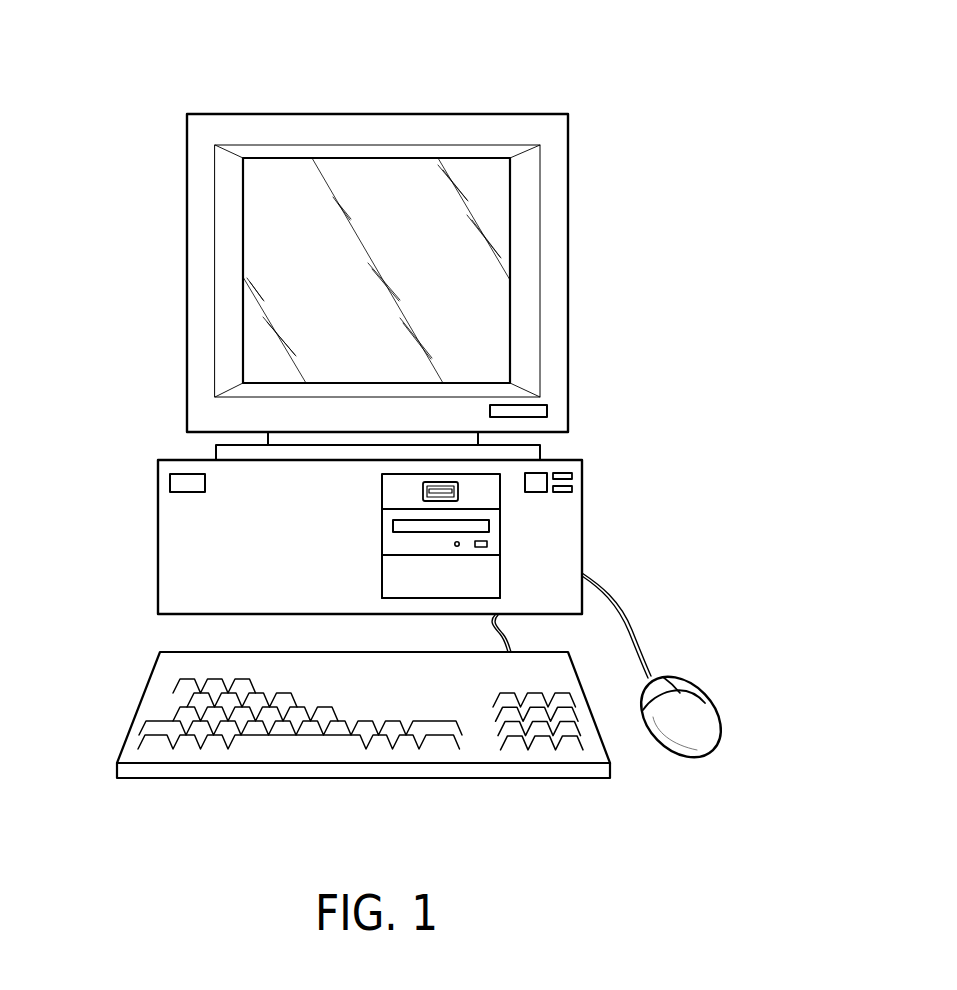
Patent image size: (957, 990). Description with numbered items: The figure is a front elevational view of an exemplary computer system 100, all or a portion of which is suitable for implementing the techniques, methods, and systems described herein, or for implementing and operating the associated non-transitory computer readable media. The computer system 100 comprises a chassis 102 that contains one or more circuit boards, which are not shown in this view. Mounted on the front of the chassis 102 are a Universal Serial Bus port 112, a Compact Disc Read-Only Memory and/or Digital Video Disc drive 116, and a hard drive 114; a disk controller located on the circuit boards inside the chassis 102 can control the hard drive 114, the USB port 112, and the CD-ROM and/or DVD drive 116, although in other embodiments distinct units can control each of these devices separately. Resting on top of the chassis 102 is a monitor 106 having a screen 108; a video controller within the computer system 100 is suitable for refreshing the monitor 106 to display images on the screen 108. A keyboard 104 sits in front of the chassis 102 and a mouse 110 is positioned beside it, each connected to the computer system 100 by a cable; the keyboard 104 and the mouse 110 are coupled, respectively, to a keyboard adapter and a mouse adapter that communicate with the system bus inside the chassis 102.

The computer system 100 is at (556, 92).
The chassis 102 is at (158, 538).
The keyboard 104 is at (136, 702).
The monitor 106 is at (262, 113).
The screen 108 is at (292, 277).
The mouse 110 is at (700, 707).
The Universal Serial Bus (USB) port 112 is at (463, 488).
The hard drive 114 is at (490, 574).
The CD-ROM and/or DVD drive 116 is at (490, 533).